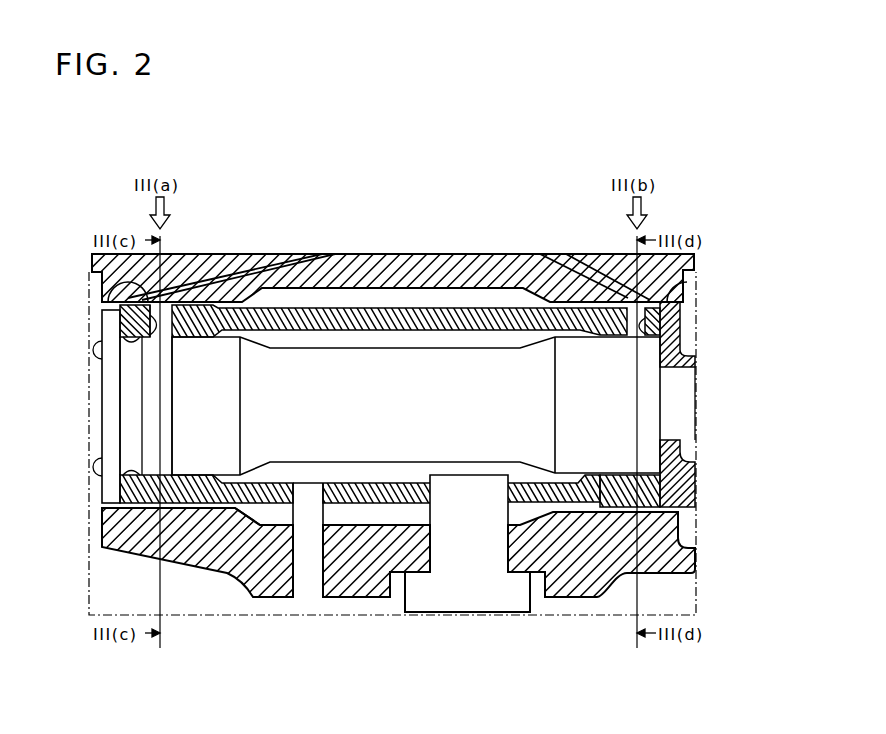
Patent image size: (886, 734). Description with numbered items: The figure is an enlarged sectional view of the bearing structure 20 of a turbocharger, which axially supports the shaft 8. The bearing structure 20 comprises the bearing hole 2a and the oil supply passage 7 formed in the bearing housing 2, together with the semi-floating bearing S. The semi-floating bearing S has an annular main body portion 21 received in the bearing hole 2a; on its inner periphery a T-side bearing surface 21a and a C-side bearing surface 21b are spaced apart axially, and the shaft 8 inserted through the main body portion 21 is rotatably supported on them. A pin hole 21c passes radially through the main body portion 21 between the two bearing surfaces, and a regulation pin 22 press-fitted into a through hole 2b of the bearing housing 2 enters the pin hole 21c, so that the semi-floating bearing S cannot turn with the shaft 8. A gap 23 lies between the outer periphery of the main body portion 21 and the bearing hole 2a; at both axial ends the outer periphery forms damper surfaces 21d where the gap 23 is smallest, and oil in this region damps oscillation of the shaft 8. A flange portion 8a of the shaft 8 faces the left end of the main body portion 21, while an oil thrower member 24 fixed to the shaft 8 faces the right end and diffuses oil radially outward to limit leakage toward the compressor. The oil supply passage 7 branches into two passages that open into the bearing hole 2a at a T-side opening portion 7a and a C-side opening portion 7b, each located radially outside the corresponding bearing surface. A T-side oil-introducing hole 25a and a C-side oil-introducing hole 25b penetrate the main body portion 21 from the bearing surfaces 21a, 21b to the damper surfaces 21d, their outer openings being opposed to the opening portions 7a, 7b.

The bearing structure 20 is at (100, 140).
The bearing housing 2 is at (458, 262).
The bearing hole 2a is at (238, 510).
The through hole 2b is at (433, 548).
The oil supply passage 7 is at (389, 250).
The T-side opening portion 7a is at (136, 300).
The C-side opening portion 7b is at (627, 297).
The shaft 8 is at (293, 492).
The flange portion 8a is at (100, 492).
The main body portion 21 is at (332, 486).
The semi-floating bearing S is at (416, 406).
The T-side bearing surface 21a is at (178, 338).
The C-side bearing surface 21b is at (593, 337).
The pin hole 21c is at (507, 495).
The damper surface 21d is at (110, 292).
The regulation pin 22 is at (481, 613).
The gap 23 is at (375, 298).
The oil thrower member 24 is at (690, 488).
The T-side oil-introducing hole 25a is at (143, 326).
The C-side oil-introducing hole 25b is at (662, 326).